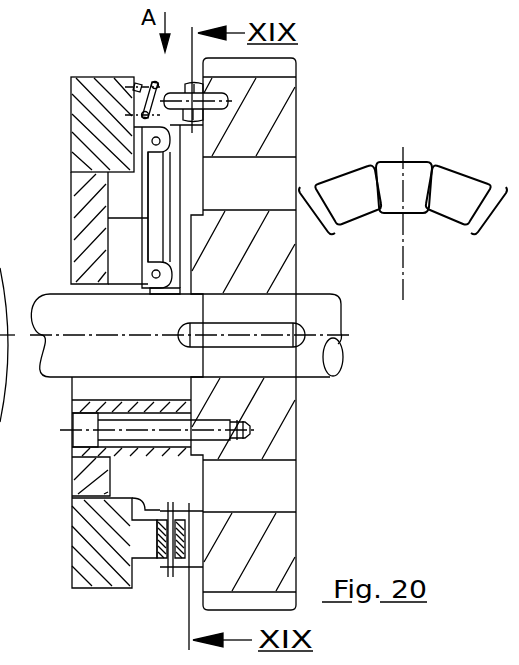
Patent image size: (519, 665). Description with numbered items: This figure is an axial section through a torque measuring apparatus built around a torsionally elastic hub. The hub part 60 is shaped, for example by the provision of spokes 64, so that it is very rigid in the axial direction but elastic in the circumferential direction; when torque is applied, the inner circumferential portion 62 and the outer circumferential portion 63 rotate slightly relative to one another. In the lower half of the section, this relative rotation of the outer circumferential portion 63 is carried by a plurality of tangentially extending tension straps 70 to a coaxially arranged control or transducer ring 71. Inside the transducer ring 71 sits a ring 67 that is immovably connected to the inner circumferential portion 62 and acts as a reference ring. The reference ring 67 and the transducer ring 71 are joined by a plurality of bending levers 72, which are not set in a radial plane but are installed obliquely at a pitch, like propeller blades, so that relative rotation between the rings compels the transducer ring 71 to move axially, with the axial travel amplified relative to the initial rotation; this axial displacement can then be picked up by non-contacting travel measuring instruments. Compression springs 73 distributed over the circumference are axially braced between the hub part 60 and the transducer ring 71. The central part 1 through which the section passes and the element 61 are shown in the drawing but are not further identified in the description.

The shaft 1 is at (334, 358).
The hub part 60 is at (257, 67).
The pole pieces 61 is at (257, 185).
The inner circumferential portion 62 is at (247, 272).
The outer circumferential portion 63 is at (257, 127).
The spokes 64 is at (437, 192).
The reference ring 67 is at (103, 260).
The tension straps 70 is at (153, 540).
The transducer ring 71 is at (108, 126).
The bending levers 72 is at (160, 203).
The compression springs 73 is at (157, 82).